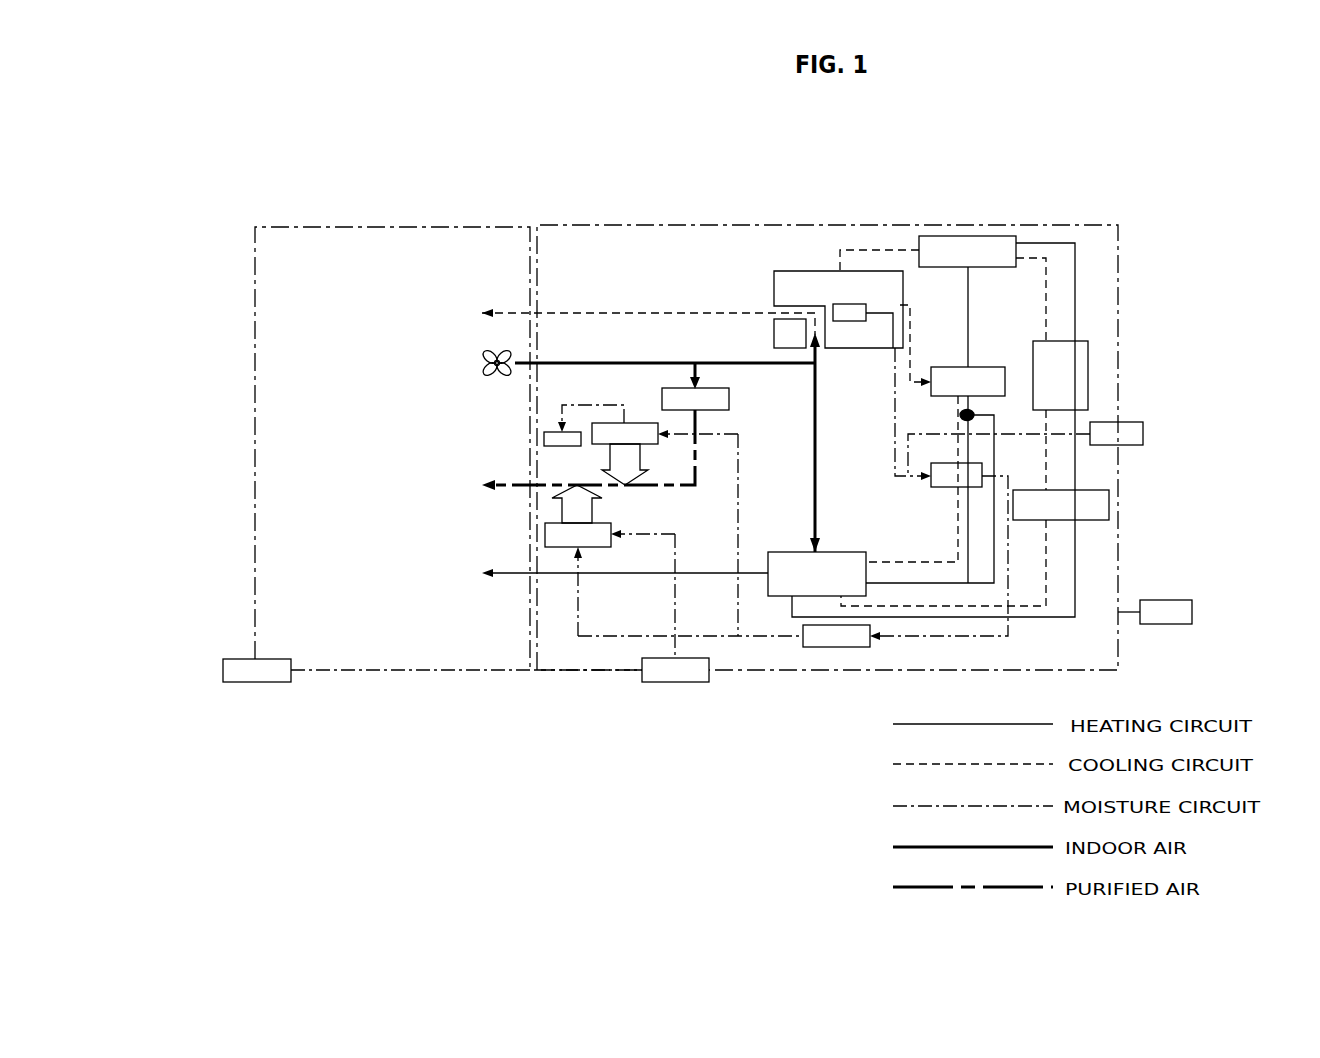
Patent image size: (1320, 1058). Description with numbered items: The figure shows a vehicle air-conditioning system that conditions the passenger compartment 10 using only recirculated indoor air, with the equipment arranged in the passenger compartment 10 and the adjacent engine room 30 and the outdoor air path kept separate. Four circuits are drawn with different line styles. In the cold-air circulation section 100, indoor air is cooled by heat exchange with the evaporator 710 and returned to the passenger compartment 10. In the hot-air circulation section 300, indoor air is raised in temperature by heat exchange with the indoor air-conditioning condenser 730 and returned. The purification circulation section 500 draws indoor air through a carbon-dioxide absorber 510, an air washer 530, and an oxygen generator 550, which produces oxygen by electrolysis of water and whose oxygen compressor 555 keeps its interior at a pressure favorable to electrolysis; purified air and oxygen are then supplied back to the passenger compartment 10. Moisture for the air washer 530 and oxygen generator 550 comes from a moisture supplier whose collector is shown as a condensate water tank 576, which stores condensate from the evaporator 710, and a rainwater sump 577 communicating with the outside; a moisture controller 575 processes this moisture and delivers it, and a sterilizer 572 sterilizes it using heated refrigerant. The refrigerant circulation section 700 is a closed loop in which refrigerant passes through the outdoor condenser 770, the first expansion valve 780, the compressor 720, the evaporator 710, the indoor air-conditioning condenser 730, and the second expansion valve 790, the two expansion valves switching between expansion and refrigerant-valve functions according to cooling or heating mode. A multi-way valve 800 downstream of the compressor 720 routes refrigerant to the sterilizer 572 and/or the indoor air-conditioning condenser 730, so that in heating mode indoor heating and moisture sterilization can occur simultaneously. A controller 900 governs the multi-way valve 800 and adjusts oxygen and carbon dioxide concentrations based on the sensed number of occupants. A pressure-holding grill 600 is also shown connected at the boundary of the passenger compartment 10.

The passenger compartment 10 is at (337, 227).
The engine room 30 is at (613, 225).
The cold-air circulation section 100 is at (703, 313).
The hot-air circulation section 300 is at (557, 575).
The purification circulation section 500 is at (698, 462).
The carbon-dioxide absorber 510 is at (712, 389).
The air washer 530 is at (637, 423).
The oxygen generator 550 is at (552, 534).
The oxygen compressor 555 is at (678, 682).
The sterilizer 572 is at (937, 487).
The moisture controller 575 is at (835, 647).
The condensate water tank 576 is at (853, 304).
The rainwater sump 577 is at (1143, 434).
The pressure-holding grill 600 is at (232, 672).
The refrigerant circulation section 700 is at (1092, 332).
The evaporator 710 is at (795, 271).
The compressor 720 is at (985, 367).
The indoor air-conditioning condenser 730 is at (840, 552).
The outdoor condenser 770 is at (1088, 368).
The first expansion valve 780 is at (960, 236).
The second expansion valve 790 is at (1103, 505).
The multi-way valve 800 is at (960, 415).
The controller 900 is at (1192, 614).